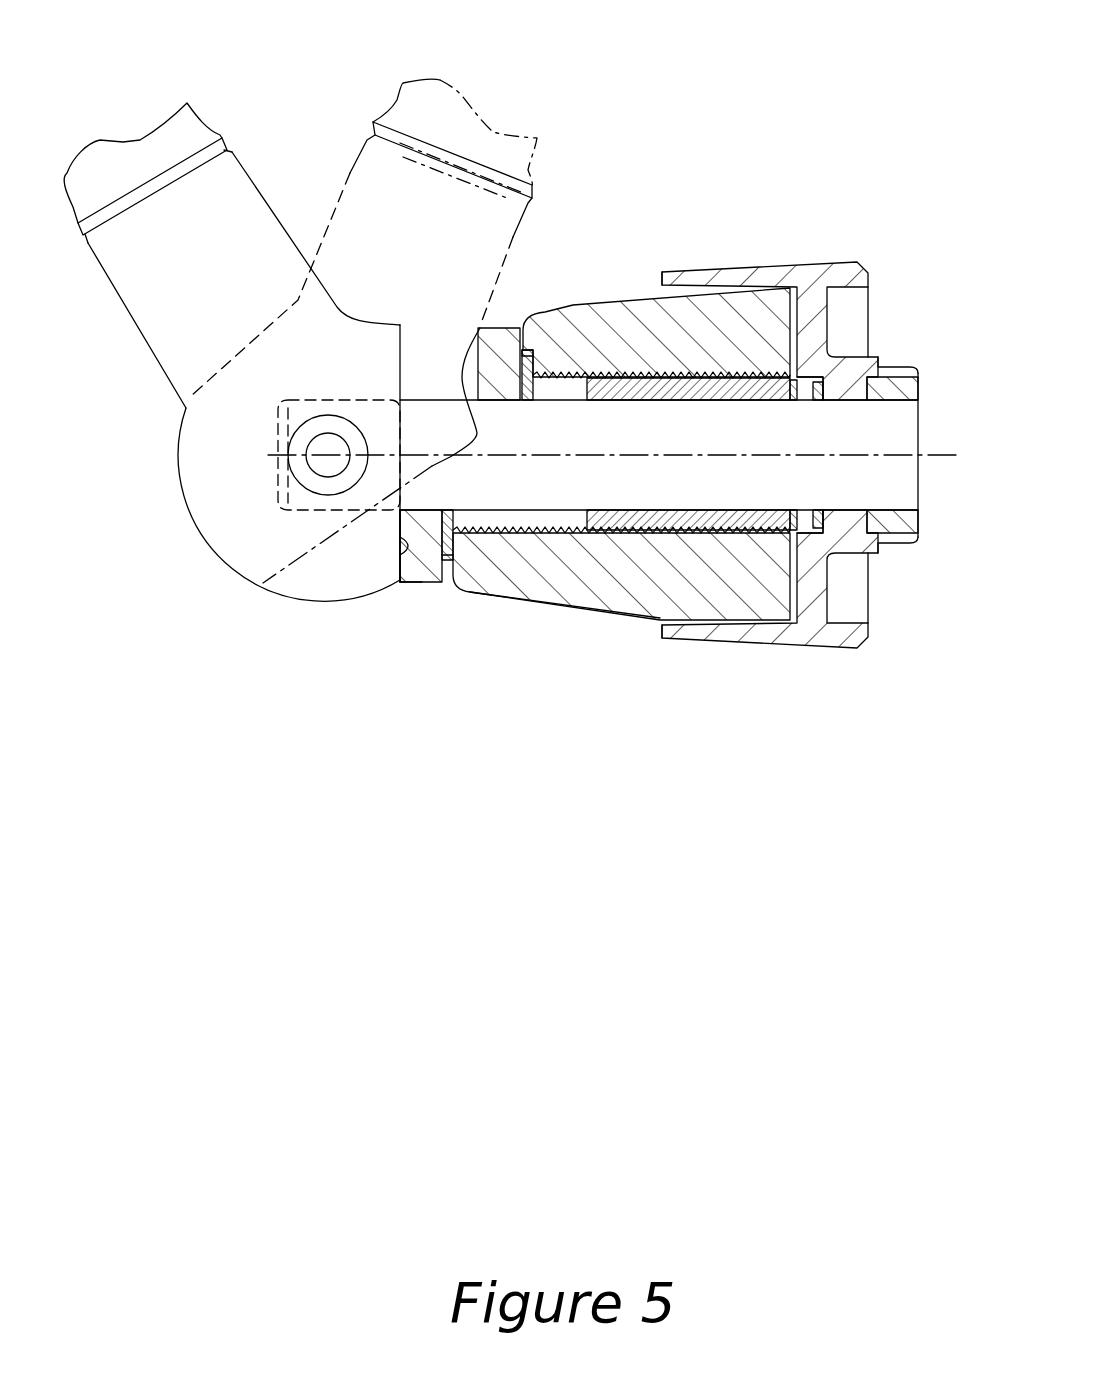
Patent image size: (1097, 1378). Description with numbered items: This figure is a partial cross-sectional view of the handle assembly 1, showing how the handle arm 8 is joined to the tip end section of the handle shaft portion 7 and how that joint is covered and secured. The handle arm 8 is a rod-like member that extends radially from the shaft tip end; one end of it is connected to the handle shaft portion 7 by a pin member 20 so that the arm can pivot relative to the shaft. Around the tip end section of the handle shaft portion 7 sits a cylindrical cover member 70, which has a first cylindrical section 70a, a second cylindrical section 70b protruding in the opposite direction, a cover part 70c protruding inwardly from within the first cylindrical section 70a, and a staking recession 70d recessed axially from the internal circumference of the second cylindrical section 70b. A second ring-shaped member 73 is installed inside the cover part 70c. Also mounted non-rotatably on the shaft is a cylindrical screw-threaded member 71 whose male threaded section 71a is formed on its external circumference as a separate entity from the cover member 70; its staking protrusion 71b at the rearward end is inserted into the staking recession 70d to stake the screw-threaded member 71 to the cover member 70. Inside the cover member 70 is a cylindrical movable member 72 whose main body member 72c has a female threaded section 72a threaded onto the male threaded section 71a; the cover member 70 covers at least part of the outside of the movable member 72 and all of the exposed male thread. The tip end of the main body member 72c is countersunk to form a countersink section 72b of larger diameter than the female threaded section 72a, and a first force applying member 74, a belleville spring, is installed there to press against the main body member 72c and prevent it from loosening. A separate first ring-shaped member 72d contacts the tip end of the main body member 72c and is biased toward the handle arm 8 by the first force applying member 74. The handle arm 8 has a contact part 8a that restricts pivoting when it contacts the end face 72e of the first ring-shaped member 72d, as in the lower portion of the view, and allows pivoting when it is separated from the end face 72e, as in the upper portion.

The handle assembly 1 is at (284, 130).
The handle shaft portion 7 is at (608, 430).
The handle arm 8 is at (173, 327).
The contact part 8a is at (397, 565).
The pin member 20 is at (323, 463).
The cylindrical cover member 70 is at (773, 273).
The first cylindrical section 70a is at (853, 277).
The second cylindrical section 70b is at (713, 277).
The cover part 70c is at (908, 373).
The staking recession 70d is at (817, 383).
The cylindrical screw-threaded member 71 is at (677, 520).
The male threaded section 71a is at (757, 527).
The staking protrusion 71b is at (807, 390).
The cylindrical movable member 72 is at (575, 592).
The female threaded section 72a is at (537, 527).
The countersink section 72b is at (446, 562).
The main body member 72c is at (618, 592).
The first ring-shaped member 72d is at (408, 584).
The end face 72e is at (362, 597).
The second ring-shaped member 73 is at (897, 522).
The first force applying member 74 is at (437, 584).